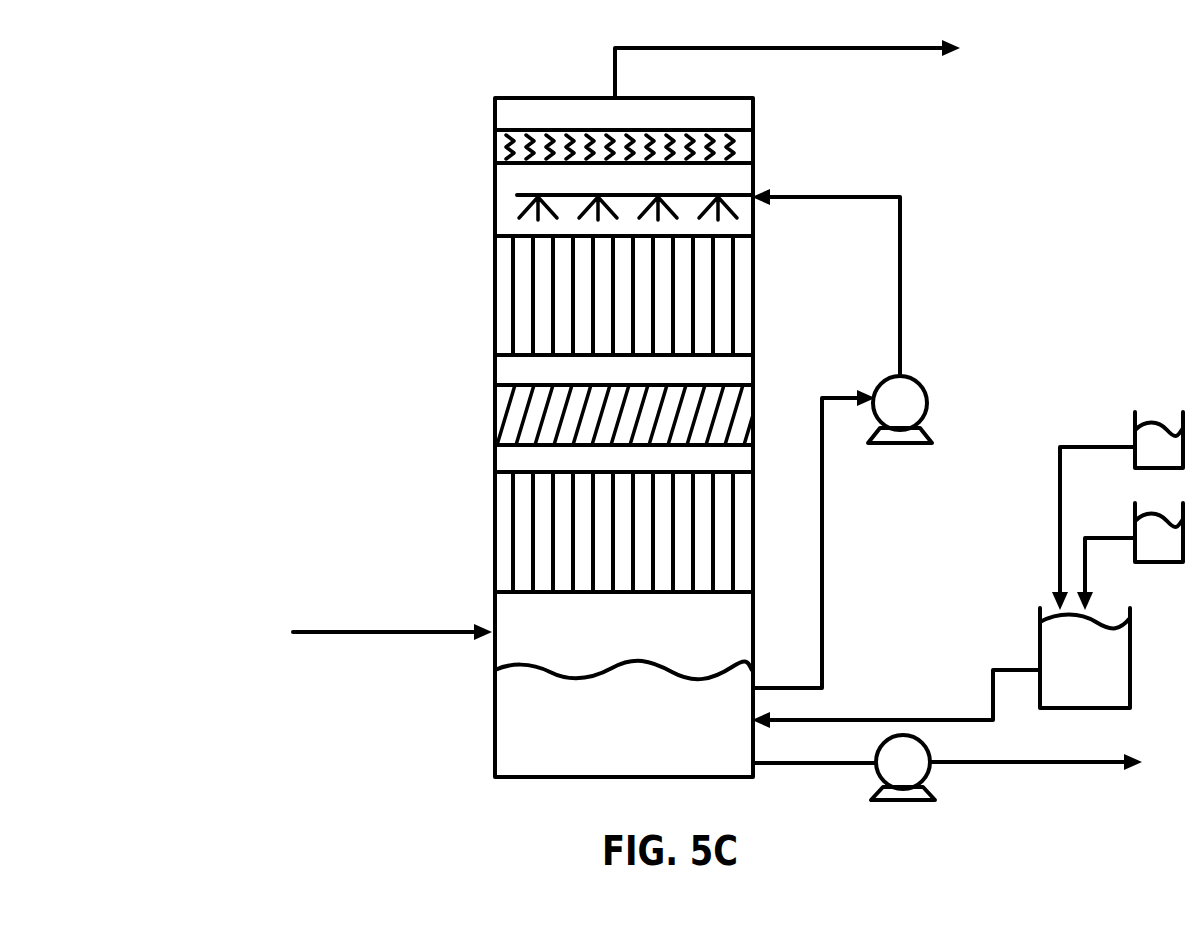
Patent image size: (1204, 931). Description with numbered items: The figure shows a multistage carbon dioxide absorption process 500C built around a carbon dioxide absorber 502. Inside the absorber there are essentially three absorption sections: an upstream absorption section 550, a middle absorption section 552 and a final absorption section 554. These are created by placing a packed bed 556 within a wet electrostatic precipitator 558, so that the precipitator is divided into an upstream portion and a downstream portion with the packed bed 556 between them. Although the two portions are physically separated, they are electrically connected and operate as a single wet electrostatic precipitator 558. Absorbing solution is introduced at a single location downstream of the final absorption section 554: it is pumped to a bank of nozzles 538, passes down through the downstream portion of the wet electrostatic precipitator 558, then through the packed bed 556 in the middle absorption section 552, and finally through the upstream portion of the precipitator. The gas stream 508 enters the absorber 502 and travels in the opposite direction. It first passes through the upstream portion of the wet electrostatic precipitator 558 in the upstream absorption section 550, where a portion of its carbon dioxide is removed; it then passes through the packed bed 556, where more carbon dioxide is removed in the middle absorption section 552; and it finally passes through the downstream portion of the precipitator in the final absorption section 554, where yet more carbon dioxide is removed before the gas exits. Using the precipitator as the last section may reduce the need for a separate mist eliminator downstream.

The process 500C is at (282, 279).
The carbon dioxide absorber 502 is at (495, 115).
The bank of nozzles 538 is at (690, 195).
The final absorption section 554 is at (543, 280).
The wet electrostatic precipitator 558 is at (530, 337).
The middle absorption section 552 is at (557, 403).
The packed bed 556 is at (513, 428).
The upstream absorption section 550 is at (580, 573).
The gas stream 508 is at (432, 636).